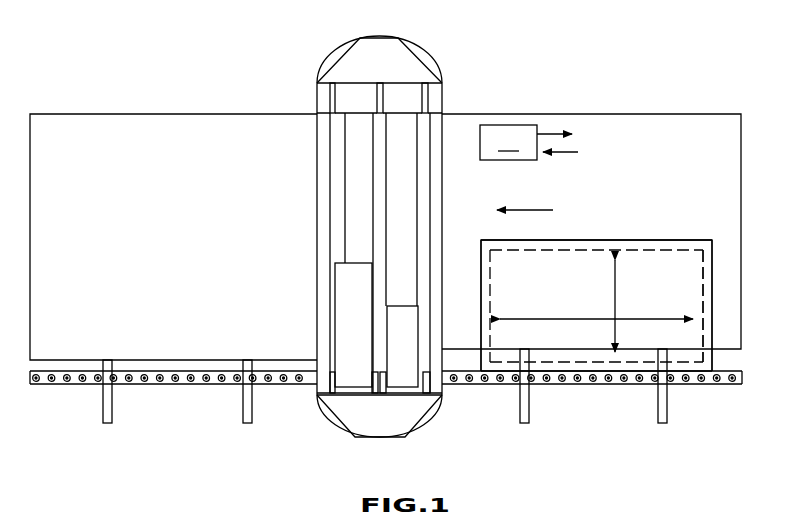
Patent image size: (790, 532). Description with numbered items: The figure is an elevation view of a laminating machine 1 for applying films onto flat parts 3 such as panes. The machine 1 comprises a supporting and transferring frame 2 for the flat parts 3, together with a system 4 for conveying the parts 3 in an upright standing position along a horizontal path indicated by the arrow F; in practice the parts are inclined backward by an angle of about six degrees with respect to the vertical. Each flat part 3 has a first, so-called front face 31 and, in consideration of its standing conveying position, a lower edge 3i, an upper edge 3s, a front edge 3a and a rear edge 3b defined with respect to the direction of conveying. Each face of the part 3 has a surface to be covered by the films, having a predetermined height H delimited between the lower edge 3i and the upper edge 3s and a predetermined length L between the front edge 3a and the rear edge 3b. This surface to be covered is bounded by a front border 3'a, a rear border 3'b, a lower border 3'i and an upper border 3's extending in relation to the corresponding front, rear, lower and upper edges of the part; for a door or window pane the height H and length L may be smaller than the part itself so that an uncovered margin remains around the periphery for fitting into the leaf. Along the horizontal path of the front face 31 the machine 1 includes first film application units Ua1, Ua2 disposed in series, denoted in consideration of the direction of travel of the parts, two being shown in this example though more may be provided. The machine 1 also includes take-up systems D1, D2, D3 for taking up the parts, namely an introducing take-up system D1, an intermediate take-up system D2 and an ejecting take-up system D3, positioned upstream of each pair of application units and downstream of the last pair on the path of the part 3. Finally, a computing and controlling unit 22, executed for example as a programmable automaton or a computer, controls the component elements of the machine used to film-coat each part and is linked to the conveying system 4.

The laminating machine 1 is at (709, 58).
The supporting and transferring frame 2 is at (127, 126).
The computing and controlling unit 22 is at (529, 142).
The flat part 3 is at (596, 278).
The upper edge 3s is at (587, 240).
The front edge 3a is at (477, 312).
The rear edge 3b is at (712, 297).
The lower edge 3i is at (564, 373).
The front face 31 is at (707, 253).
The upper border 3's is at (596, 267).
The front border 3'a is at (513, 306).
The rear border 3'b is at (685, 306).
The lower border 3'i is at (596, 343).
The conveying system 4 is at (733, 357).
The introducing take-up system D1 is at (428, 112).
The intermediate take-up system D2 is at (387, 105).
The ejecting take-up system D3 is at (320, 102).
The first film application unit Ua1 is at (403, 378).
The first film application unit Ua2 is at (353, 378).
The direction of conveying F is at (525, 198).
The height of the surface to be covered H is at (625, 306).
The length of the surface to be covered L is at (588, 318).